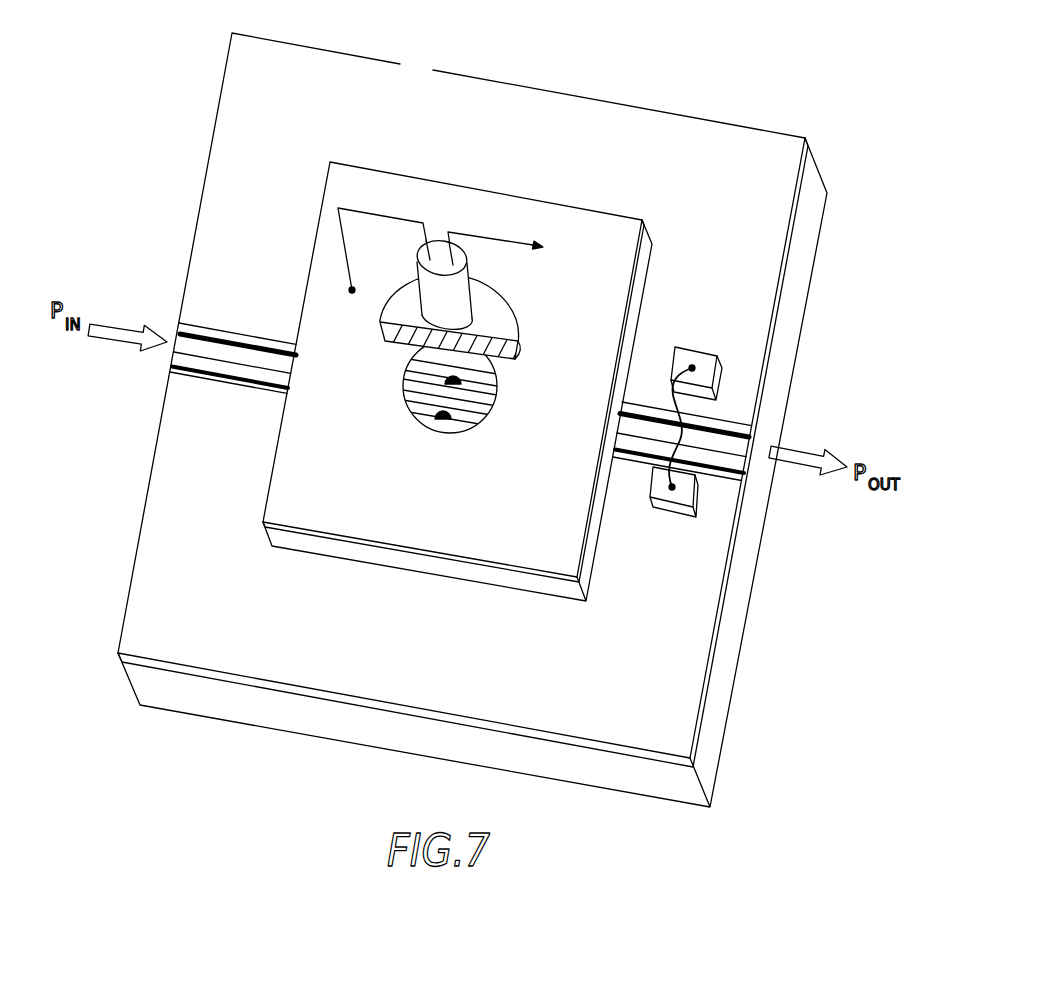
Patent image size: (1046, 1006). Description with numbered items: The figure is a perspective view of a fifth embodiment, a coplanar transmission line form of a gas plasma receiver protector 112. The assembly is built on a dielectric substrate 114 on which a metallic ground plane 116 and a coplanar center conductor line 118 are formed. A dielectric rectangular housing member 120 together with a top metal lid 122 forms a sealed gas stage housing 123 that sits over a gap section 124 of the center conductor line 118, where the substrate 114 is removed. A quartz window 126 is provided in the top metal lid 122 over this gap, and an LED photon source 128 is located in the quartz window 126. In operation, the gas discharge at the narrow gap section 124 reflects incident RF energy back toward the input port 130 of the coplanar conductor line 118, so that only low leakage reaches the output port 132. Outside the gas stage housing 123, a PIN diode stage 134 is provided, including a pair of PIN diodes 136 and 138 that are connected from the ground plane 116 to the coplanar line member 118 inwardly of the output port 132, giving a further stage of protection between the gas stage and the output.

The gas plasma receiver protector 112 is at (472, 420).
The dielectric substrate 114 is at (472, 472).
The metallic ground plane 116 is at (708, 135).
The coplanar center conductor line 118 is at (207, 356).
The dielectric rectangular housing member 120 is at (457, 392).
The top metal lid 122 is at (340, 543).
The gas stage housing 123 is at (351, 450).
The gap section 124 is at (475, 441).
The quartz window 126 is at (397, 312).
The LED photon source 128 is at (417, 255).
The input port 130 is at (183, 345).
The output port 132 is at (755, 460).
The PIN diode stage 134 is at (650, 362).
The PIN diode 136 is at (672, 517).
The PIN diode 138 is at (688, 347).